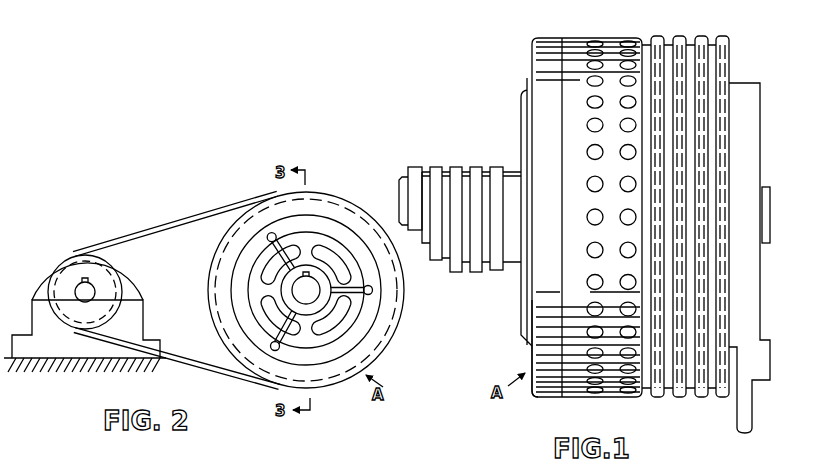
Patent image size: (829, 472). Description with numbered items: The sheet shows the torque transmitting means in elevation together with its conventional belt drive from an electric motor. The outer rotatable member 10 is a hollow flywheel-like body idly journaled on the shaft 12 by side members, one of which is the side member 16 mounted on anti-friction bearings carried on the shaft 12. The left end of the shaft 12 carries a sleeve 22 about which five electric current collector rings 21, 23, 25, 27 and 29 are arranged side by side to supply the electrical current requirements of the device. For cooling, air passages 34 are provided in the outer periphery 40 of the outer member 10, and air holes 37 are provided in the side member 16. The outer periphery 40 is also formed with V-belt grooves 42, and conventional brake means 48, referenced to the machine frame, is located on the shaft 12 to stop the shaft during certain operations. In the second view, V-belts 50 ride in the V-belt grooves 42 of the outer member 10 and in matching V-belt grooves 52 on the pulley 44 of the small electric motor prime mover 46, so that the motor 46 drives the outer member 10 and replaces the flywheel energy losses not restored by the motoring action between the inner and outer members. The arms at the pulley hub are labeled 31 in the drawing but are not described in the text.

In FIG. 1, the outer rotatable member 10 is at (603, 34).
In FIG. 2, the shaft 12 is at (292, 294).
In FIG. 2, the side member 16 is at (216, 270).
In FIG. 1, the side member 16 is at (540, 355).
In FIG. 1, the collector ring 21 is at (415, 167).
In FIG. 1, the sleeve 22 is at (399, 206).
In FIG. 1, the collector ring 23 is at (436, 167).
In FIG. 1, the collector ring 25 is at (463, 158).
In FIG. 1, the collector ring 27 is at (478, 167).
In FIG. 1, the collector ring 29 is at (508, 158).
In FIG. 2, the pivot arms / flange 31 is at (262, 226).
In FIG. 1, the pivot arms / flange 31 is at (505, 171).
In FIG. 1, the air passages 34 is at (597, 246).
In FIG. 2, the air holes 37 is at (345, 314).
In FIG. 1, the outer periphery 40 is at (562, 42).
In FIG. 1, the V-belt grooves 42 is at (711, 38).
In FIG. 2, the pulley 44 is at (73, 278).
In FIG. 2, the electric motor prime mover 46 is at (96, 238).
In FIG. 1, the brake means 48 is at (737, 413).
In FIG. 2, the V-belts 50 is at (195, 364).
In FIG. 2, the V-belt grooves 52 is at (50, 286).